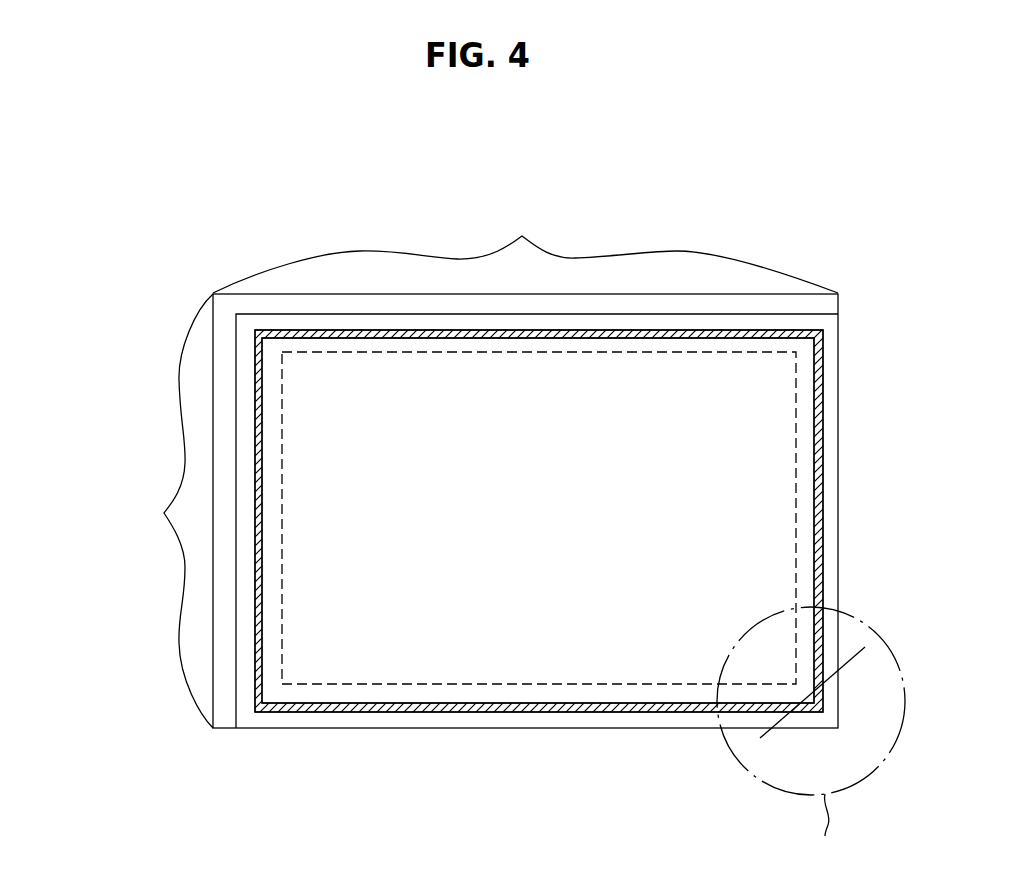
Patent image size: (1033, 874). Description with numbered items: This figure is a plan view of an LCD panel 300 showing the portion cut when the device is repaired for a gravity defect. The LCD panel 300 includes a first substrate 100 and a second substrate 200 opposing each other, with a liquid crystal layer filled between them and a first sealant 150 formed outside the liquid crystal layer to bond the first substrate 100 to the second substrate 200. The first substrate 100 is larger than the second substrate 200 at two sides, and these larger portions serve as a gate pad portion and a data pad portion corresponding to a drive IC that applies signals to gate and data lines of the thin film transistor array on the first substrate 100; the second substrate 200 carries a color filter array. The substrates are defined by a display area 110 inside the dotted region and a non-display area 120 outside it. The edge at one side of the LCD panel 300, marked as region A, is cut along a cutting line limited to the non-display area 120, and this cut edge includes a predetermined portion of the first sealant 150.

The LCD panel 300 is at (813, 249).
The first substrate 100 is at (833, 303).
The second substrate 200 is at (833, 329).
The first sealant 150 is at (398, 705).
The non-display area 120 is at (513, 693).
The display area 110 is at (587, 665).